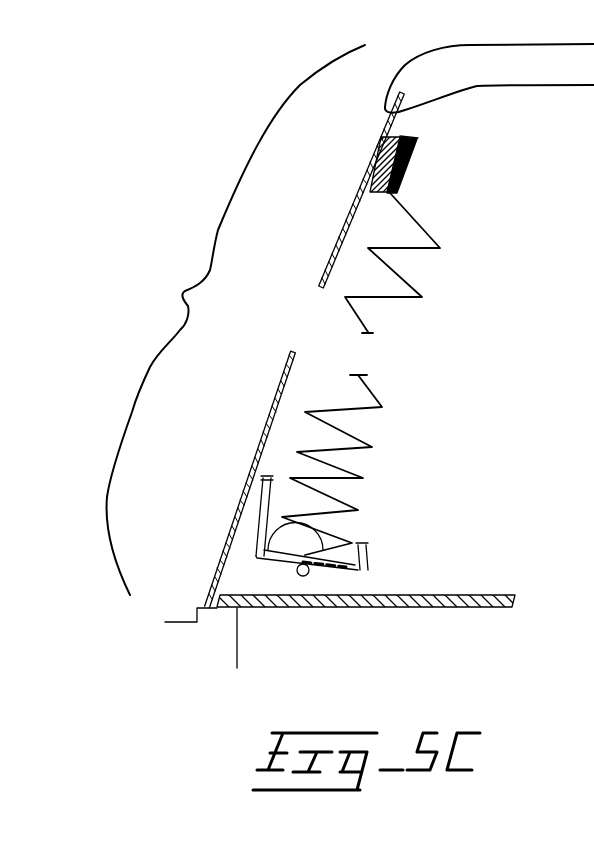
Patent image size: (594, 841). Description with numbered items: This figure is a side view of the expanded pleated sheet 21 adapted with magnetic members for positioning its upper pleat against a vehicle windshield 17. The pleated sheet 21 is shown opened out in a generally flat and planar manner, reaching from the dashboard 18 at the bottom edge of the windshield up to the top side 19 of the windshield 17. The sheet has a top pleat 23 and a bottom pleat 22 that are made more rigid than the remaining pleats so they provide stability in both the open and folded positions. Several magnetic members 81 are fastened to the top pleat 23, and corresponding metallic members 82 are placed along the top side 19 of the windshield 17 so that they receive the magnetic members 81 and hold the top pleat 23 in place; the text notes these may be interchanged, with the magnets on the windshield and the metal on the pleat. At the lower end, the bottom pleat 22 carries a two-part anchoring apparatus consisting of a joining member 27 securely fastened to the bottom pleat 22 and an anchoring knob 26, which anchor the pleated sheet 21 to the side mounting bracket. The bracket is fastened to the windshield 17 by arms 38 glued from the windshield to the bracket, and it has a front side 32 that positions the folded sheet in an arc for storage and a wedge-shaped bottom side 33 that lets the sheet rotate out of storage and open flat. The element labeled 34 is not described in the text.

The windshield 17 is at (273, 387).
The dashboard 18 is at (282, 608).
The top side of the windshield 19 is at (390, 122).
The pleated sheet 21 is at (422, 295).
The bottom pleat 22 is at (266, 520).
The top pleat 23 is at (403, 161).
The anchoring knob 26 is at (310, 574).
The joining member 27 is at (313, 542).
The front side of side mounting bracket 32 is at (258, 551).
The bottom side of side mounting bracket 33 is at (257, 561).
The stop flange 34 is at (367, 550).
The fastening arms 38 is at (256, 498).
The magnetic members 81 is at (410, 132).
The metallic members 82 is at (373, 156).